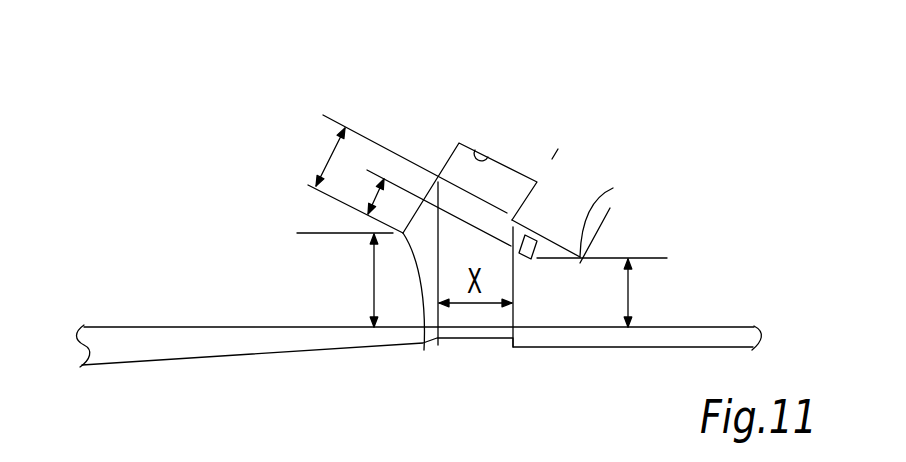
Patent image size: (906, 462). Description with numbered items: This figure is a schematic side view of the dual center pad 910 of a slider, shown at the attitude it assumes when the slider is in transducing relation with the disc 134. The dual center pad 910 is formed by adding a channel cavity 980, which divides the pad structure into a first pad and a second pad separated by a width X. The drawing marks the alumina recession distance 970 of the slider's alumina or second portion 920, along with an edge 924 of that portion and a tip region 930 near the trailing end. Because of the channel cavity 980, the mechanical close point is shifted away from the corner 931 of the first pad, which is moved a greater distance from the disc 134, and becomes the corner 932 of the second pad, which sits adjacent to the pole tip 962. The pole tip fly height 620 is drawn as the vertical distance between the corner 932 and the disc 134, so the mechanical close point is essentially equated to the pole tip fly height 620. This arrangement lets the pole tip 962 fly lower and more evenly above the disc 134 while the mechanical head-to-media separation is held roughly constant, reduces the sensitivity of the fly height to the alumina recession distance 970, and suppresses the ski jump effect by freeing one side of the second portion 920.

The dual center pad 910 is at (390, 50).
The alumina recession distance 970 is at (329, 156).
The second portion 920 is at (533, 153).
The channel cavity 980 is at (477, 148).
The head edge 924 is at (546, 168).
The probe tip section 930 is at (600, 224).
The pole tip 962 is at (617, 216).
The corner of the second center pad 932 is at (580, 262).
The corner of the first center pad 931 is at (424, 350).
The pole tip fly height 620 is at (632, 288).
The disc 134 is at (80, 344).